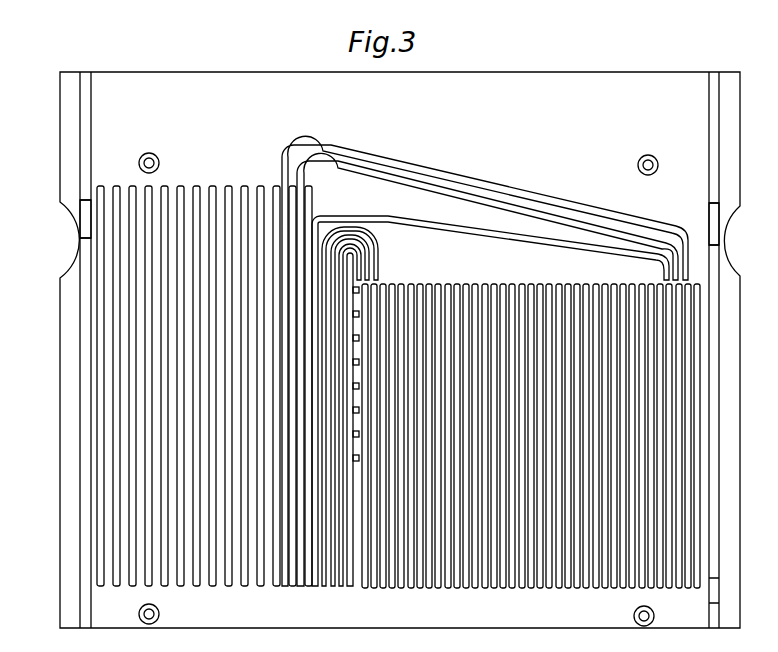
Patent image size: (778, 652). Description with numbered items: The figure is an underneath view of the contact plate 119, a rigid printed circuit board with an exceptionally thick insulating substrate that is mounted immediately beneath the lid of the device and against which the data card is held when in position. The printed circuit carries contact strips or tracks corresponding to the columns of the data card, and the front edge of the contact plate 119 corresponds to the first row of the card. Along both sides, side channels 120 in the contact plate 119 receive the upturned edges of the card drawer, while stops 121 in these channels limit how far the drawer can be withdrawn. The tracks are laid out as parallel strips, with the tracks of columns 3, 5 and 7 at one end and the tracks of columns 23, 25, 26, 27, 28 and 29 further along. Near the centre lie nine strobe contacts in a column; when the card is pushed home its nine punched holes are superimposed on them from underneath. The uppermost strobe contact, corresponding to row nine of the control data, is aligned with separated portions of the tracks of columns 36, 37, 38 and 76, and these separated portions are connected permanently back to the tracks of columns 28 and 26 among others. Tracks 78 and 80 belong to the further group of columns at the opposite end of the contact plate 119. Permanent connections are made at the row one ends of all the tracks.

The contact track 3 is at (101, 394).
The contact track 5 is at (116, 394).
The contact track 7 is at (131, 394).
The contact track 23 is at (258, 394).
The contact track 25 is at (275, 394).
The contact track 26 is at (481, 374).
The contact track 27 is at (292, 394).
The contact track 28 is at (485, 383).
The contact track 29 is at (309, 394).
The contact track 36 is at (361, 443).
The contact track 37 is at (372, 448).
The contact track 38 is at (380, 443).
The contact track 76 is at (669, 443).
The contact track 78 is at (682, 443).
The contact track 80 is at (696, 443).
The contact plate 119 is at (418, 115).
The side channel 120 is at (83, 90).
The stop 121 is at (76, 219).